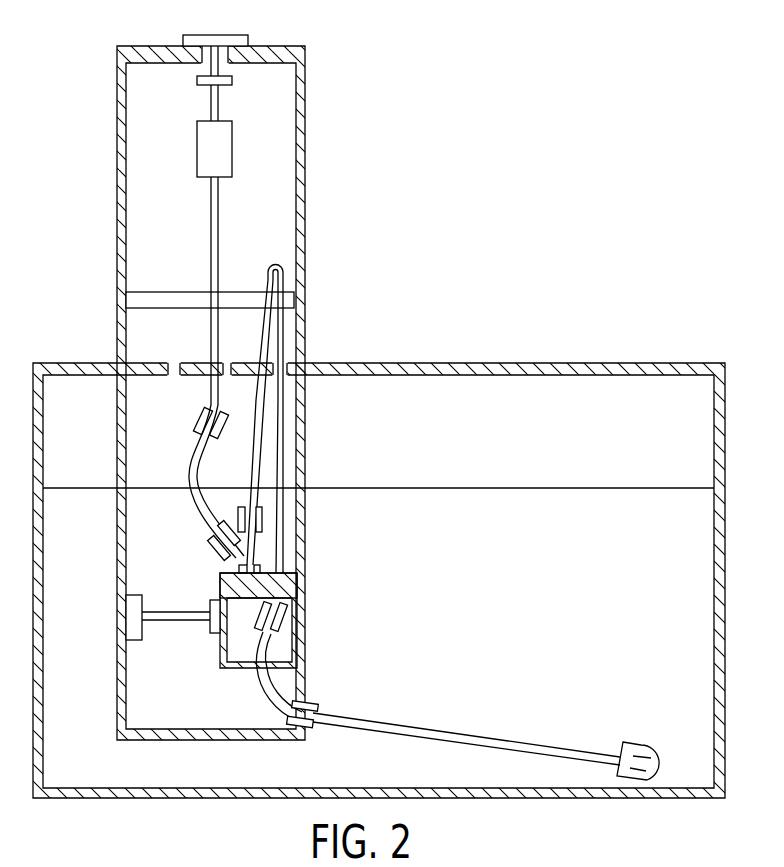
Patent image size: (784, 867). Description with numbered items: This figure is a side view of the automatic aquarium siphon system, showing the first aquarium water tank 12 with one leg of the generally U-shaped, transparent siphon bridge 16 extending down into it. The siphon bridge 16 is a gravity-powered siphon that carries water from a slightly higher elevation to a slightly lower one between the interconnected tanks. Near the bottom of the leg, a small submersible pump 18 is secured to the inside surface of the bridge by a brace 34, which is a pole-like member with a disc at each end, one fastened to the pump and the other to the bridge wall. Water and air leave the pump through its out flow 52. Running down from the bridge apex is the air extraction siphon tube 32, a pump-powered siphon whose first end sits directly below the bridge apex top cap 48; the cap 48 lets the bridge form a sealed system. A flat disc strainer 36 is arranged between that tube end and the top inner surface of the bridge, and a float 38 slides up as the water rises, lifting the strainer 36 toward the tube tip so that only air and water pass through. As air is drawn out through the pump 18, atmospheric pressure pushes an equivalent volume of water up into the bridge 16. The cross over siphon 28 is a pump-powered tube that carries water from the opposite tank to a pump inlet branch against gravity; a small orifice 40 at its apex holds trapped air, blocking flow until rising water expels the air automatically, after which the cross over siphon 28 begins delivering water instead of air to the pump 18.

The first aquarium water tank 12 is at (695, 433).
The siphon bridge 16 is at (118, 83).
The submersible pump 18 is at (220, 655).
The cross over siphon 28 is at (260, 337).
The air extraction siphon tube 32 is at (218, 237).
The brace 34 is at (163, 610).
The strainer 36 is at (232, 78).
The float 38 is at (232, 148).
The orifice 40 is at (278, 262).
The bridge apex top cap 48 is at (250, 35).
The out flow 52 is at (302, 585).